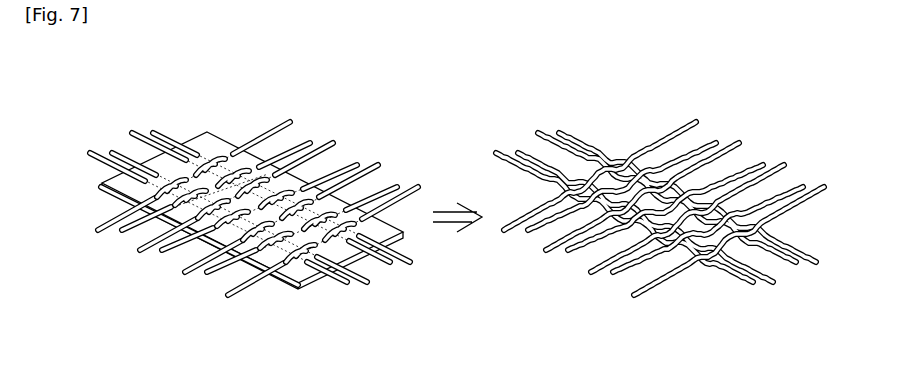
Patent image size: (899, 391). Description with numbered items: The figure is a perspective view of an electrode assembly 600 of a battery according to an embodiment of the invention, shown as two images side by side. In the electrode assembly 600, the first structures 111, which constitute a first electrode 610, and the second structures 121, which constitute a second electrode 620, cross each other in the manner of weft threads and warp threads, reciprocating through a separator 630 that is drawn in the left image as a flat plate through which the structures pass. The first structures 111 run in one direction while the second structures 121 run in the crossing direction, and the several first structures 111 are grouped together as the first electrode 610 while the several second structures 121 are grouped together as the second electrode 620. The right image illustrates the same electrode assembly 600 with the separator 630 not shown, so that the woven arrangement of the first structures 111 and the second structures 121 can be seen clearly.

The electrode assembly 600 is at (329, 93).
The first electrode 610 is at (440, 292).
The second electrode 620 is at (31, 262).
The separator 630 is at (306, 288).
The first structures 111 is at (395, 266).
The second structures 121 is at (650, 296).